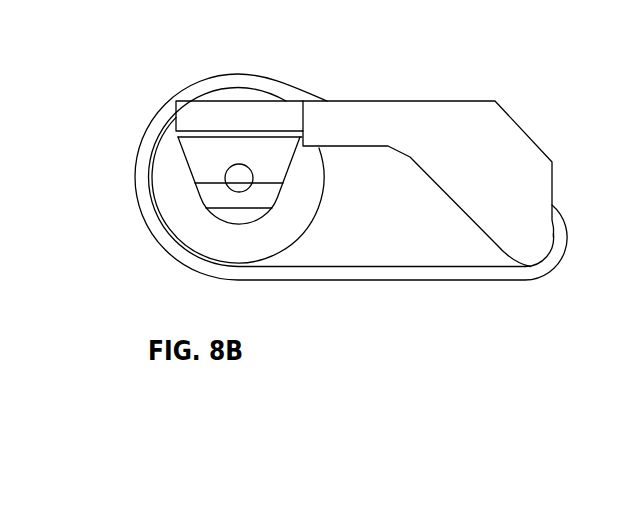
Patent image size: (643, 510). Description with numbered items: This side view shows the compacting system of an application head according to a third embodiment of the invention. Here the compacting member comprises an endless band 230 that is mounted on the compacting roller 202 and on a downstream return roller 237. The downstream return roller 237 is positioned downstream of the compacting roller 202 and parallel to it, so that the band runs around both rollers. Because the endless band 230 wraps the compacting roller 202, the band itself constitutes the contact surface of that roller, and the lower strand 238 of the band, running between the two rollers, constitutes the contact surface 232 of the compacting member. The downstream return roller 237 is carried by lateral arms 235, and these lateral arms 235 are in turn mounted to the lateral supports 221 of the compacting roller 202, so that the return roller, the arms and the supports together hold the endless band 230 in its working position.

The compacting roller 202 is at (160, 172).
The lateral supports 221 is at (203, 110).
The endless band 230 is at (382, 209).
The contact surface 232 is at (488, 280).
The lateral arms 235 is at (437, 112).
The downstream return roller 237 is at (533, 245).
The lower strand 238 is at (297, 268).